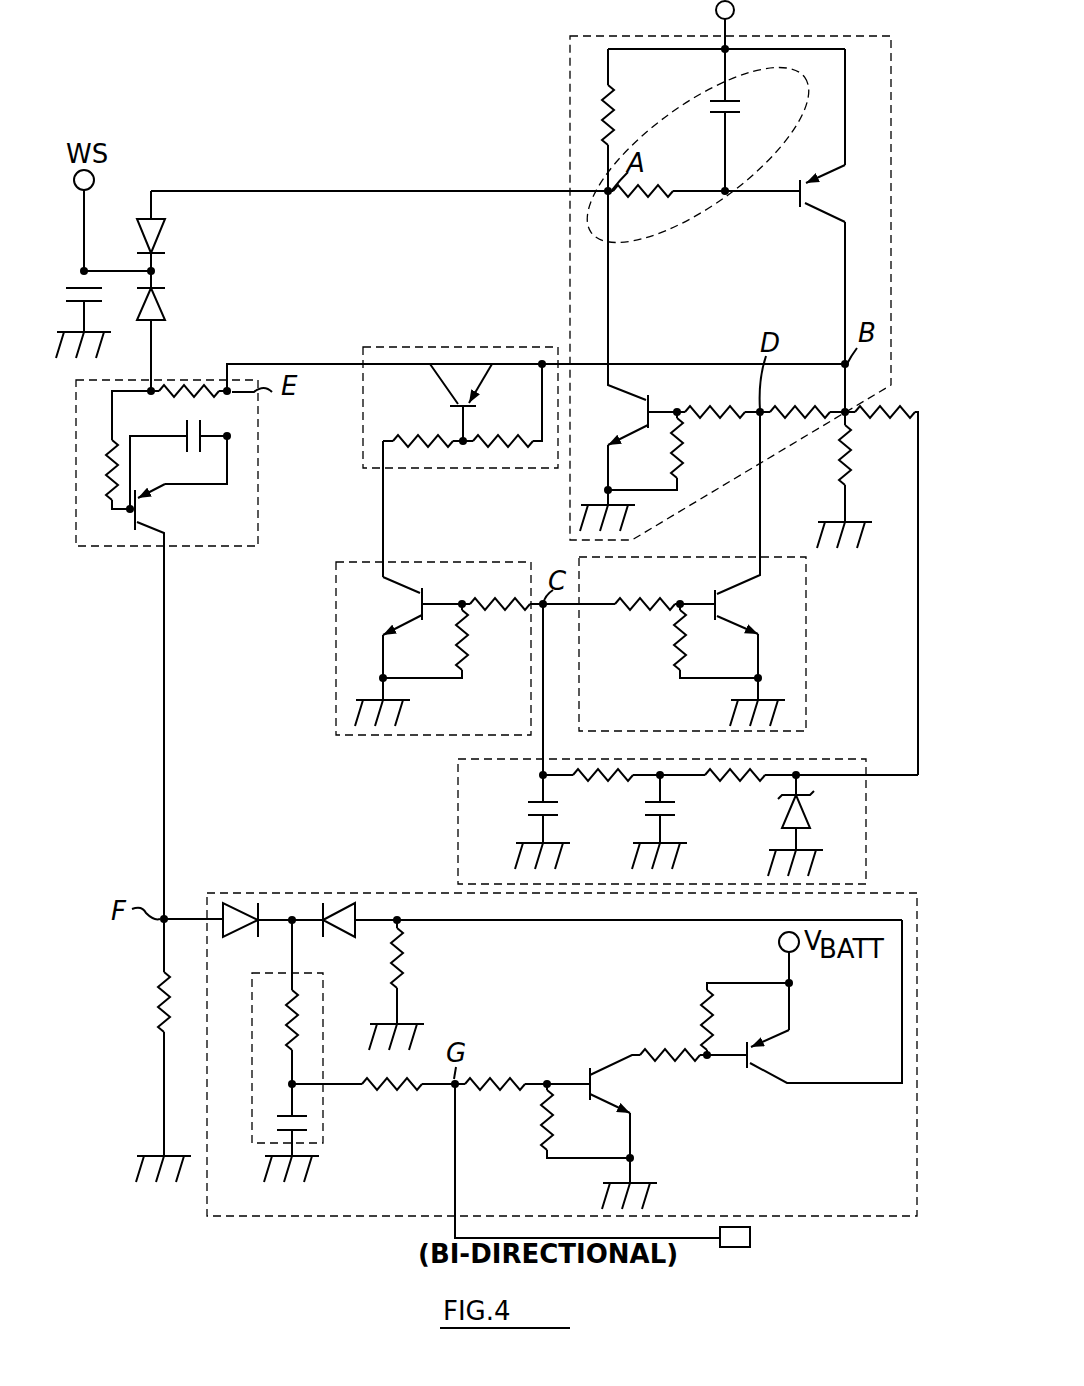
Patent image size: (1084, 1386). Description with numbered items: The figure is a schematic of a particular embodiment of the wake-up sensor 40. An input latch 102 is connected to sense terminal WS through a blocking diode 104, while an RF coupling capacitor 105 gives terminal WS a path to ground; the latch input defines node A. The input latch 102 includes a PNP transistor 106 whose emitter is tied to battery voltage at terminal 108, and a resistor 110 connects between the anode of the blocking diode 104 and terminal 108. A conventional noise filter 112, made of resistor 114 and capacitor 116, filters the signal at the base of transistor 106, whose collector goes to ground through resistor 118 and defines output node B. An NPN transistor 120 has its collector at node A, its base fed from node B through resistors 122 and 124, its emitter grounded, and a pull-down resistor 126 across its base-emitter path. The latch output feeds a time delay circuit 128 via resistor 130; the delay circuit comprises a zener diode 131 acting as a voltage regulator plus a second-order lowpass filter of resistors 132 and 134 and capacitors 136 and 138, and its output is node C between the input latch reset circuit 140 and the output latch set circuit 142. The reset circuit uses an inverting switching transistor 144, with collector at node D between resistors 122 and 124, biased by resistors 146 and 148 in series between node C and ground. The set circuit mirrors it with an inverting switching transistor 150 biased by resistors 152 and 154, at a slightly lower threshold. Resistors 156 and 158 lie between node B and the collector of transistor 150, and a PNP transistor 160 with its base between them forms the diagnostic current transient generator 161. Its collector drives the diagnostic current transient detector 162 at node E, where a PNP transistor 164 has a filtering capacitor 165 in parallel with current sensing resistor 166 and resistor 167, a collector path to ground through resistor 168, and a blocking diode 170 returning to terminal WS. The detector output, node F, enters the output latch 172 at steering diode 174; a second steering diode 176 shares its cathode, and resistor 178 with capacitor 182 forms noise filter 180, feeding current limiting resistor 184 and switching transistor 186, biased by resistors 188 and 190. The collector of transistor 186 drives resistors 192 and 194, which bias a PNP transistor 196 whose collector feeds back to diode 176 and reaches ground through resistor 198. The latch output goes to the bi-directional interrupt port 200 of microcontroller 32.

The wake-up sensor 40 is at (290, 58).
The input latch 102 is at (570, 56).
The blocking diode 104 is at (163, 240).
The RF coupling capacitor 105 is at (93, 290).
The PNP transistor 106 is at (822, 214).
The terminal 108 is at (716, 10).
The resistor 110 is at (606, 98).
The noise filter 112 is at (722, 205).
The resistor 114 is at (657, 190).
The capacitor 116 is at (713, 110).
The resistor 118 is at (834, 462).
The NPN transistor 120 is at (652, 405).
The resistor 122 is at (703, 410).
The resistor 124 is at (795, 412).
The pull-down resistor 126 is at (679, 451).
The time delay circuit 128 is at (867, 822).
The resistor 130 is at (881, 590).
The zener diode 131 is at (805, 827).
The resistor 132 is at (756, 783).
The resistor 134 is at (598, 762).
The capacitor 136 is at (657, 812).
The capacitor 138 is at (537, 798).
The input latch reset circuit 140 is at (808, 638).
The output latch set circuit 142 is at (336, 637).
The inverting switching transistor 144 is at (712, 593).
The resistor 146 is at (629, 587).
The resistor 148 is at (672, 645).
The inverting switching transistor 150 is at (430, 593).
The biasing resistor 152 is at (497, 593).
The biasing resistor 154 is at (467, 655).
The resistor 156 is at (420, 455).
The resistor 158 is at (506, 453).
The PNP transistor 160 is at (449, 406).
The diagnostic current transient generator 161 is at (485, 335).
The diagnostic current transient detector 162 is at (262, 470).
The PNP transistor 164 is at (132, 520).
The filtering capacitor 165 is at (205, 423).
The current sensing resistor 166 is at (182, 385).
The resistor 167 is at (113, 448).
The resistor 168 is at (160, 985).
The blocking diode 170 is at (164, 306).
The output latch 172 is at (312, 1218).
The steering diode 174 is at (246, 882).
The steering diode 176 is at (340, 902).
The resistor 178 is at (303, 994).
The noise filter 180 is at (320, 1148).
The capacitor 182 is at (307, 1118).
The current limiting resistor 184 is at (377, 1098).
The switching transistor 186 is at (583, 1073).
The resistor 188 is at (490, 1073).
The resistor 190 is at (540, 1130).
The resistor 192 is at (660, 1044).
The resistor 194 is at (707, 998).
The PNP transistor 196 is at (740, 1063).
The resistor 198 is at (404, 954).
The bi-directional interrupt port 200 is at (717, 1238).
The microcontroller 32 is at (750, 1247).